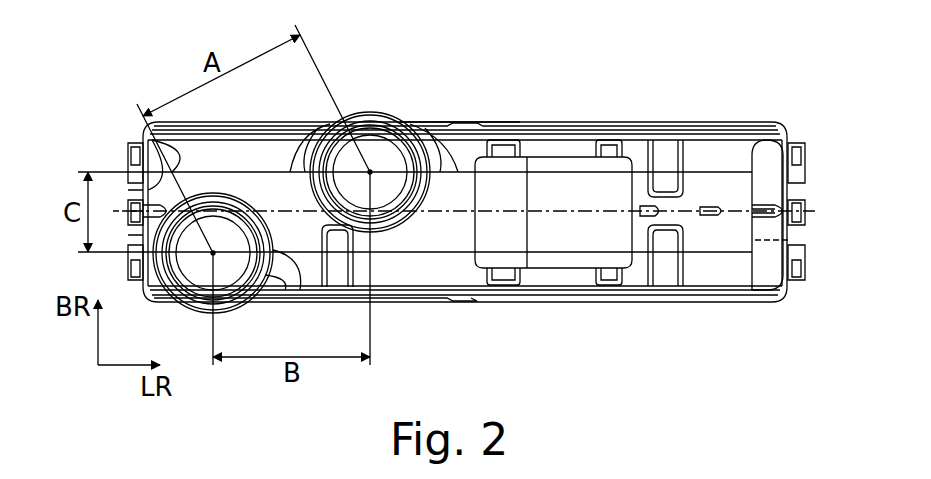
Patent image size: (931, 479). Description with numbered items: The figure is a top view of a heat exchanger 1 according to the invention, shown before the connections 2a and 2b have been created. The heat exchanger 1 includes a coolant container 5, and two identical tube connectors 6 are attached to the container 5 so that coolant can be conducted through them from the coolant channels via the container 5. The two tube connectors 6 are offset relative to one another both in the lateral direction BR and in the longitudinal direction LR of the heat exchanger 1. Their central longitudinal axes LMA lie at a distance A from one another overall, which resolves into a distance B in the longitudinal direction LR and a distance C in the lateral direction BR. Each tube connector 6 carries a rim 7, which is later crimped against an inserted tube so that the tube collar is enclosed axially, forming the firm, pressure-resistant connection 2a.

The heat exchanger 1 is at (760, 92).
The connection 2a is at (143, 262).
The connection 2b is at (412, 112).
The coolant container 5 is at (583, 152).
The tube connector 6 is at (387, 111).
The rim 7 is at (370, 172).
The central longitudinal axis LMA is at (370, 172).